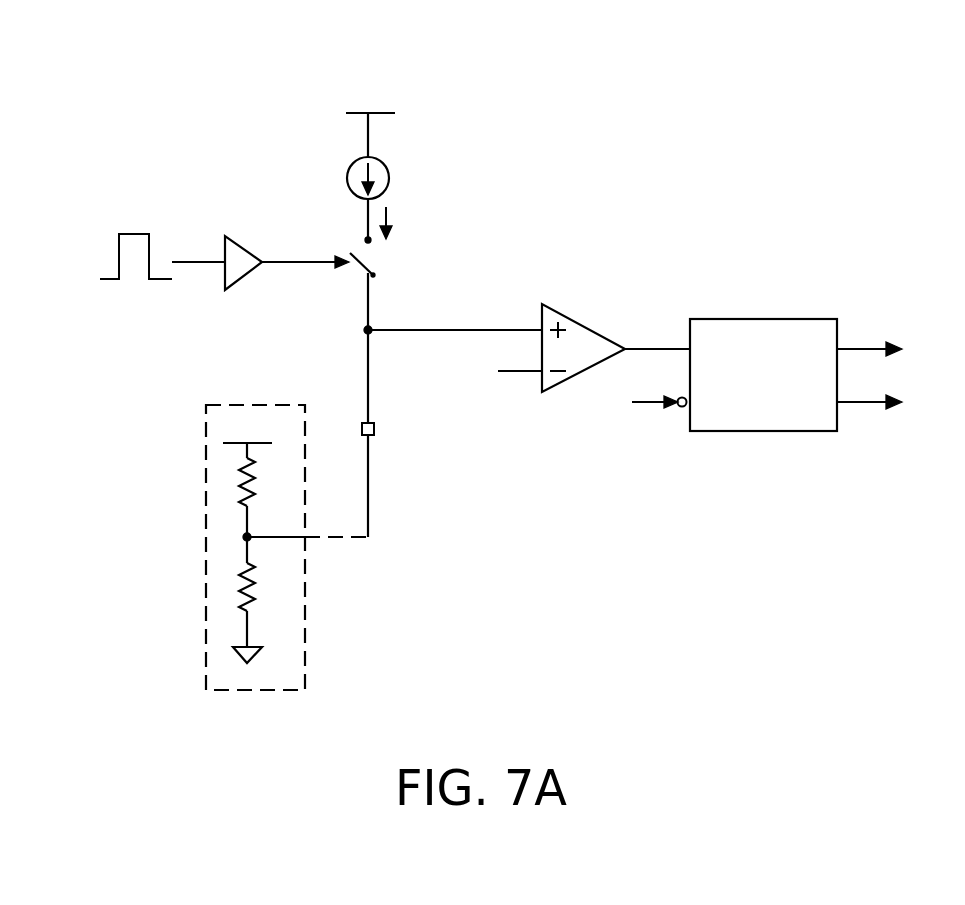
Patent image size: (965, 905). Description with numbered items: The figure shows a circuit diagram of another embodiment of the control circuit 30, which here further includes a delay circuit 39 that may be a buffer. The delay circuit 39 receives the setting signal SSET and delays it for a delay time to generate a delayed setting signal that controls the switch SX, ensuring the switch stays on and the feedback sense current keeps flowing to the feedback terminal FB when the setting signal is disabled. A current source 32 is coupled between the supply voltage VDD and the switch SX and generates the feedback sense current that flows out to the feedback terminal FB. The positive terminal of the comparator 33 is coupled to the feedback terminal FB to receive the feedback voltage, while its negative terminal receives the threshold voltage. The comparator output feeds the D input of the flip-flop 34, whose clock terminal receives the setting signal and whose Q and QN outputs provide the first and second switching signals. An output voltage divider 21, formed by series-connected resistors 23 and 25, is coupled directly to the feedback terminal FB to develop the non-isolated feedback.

The control circuit 30 is at (276, 60).
The current source 32 is at (387, 178).
The delay circuit 39 is at (243, 245).
The comparator 33 is at (583, 338).
The flip-flop 34 is at (758, 355).
The output voltage divider 21 is at (287, 547).
The resistor 23 is at (264, 482).
The resistor 25 is at (264, 587).